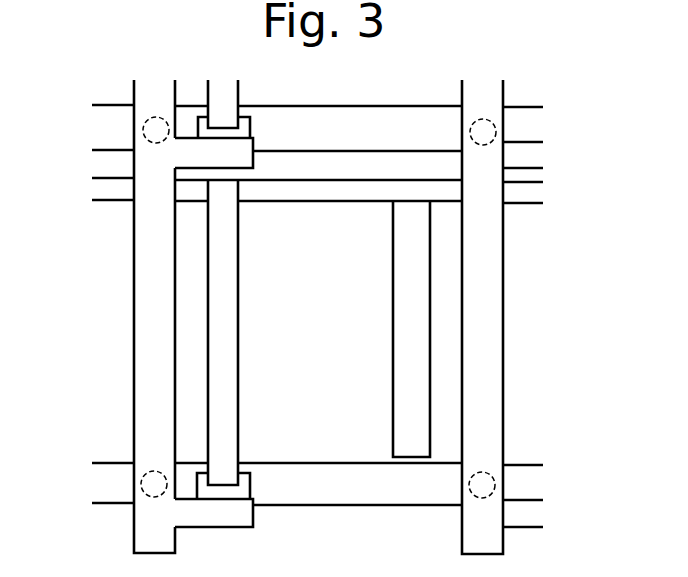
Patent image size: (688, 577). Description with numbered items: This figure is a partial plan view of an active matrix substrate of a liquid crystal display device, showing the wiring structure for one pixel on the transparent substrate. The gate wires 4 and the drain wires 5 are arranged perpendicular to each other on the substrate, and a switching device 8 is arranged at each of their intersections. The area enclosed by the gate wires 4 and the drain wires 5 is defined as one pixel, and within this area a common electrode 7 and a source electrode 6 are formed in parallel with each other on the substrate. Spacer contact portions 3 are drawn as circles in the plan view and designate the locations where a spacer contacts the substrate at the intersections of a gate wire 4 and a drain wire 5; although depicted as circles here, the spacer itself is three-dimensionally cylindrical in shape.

The spacer contact portion 3 is at (156, 116).
The gate wire 4 is at (532, 125).
The drain wire 5 is at (142, 235).
The source electrode 6 is at (212, 310).
The common electrode 7 is at (417, 345).
The switching device 8 is at (198, 130).